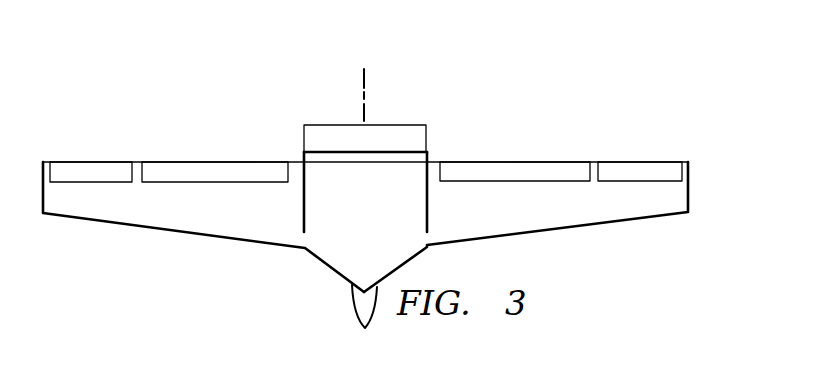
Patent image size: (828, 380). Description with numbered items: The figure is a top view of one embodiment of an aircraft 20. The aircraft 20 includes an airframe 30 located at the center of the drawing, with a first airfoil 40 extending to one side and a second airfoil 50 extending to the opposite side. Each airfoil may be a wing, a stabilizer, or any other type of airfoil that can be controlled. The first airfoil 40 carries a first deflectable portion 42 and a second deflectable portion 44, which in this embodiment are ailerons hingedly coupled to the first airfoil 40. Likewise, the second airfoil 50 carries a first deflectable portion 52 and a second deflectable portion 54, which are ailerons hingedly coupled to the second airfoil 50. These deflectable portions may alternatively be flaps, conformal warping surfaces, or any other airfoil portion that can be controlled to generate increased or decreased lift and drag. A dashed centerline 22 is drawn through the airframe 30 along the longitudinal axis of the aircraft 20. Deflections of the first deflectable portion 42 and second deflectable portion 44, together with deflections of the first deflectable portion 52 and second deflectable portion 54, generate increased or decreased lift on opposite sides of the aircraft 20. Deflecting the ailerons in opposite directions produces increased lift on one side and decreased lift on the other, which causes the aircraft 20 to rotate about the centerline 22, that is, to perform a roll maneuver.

The aircraft 20 is at (365, 188).
The centerline 22 is at (363, 95).
The airframe 30 is at (353, 313).
The first airfoil 40 is at (526, 204).
The first deflectable portion 42 is at (520, 168).
The second deflectable portion 44 is at (638, 168).
The second airfoil 50 is at (203, 206).
The first deflectable portion 52 is at (210, 170).
The second deflectable portion 54 is at (92, 170).